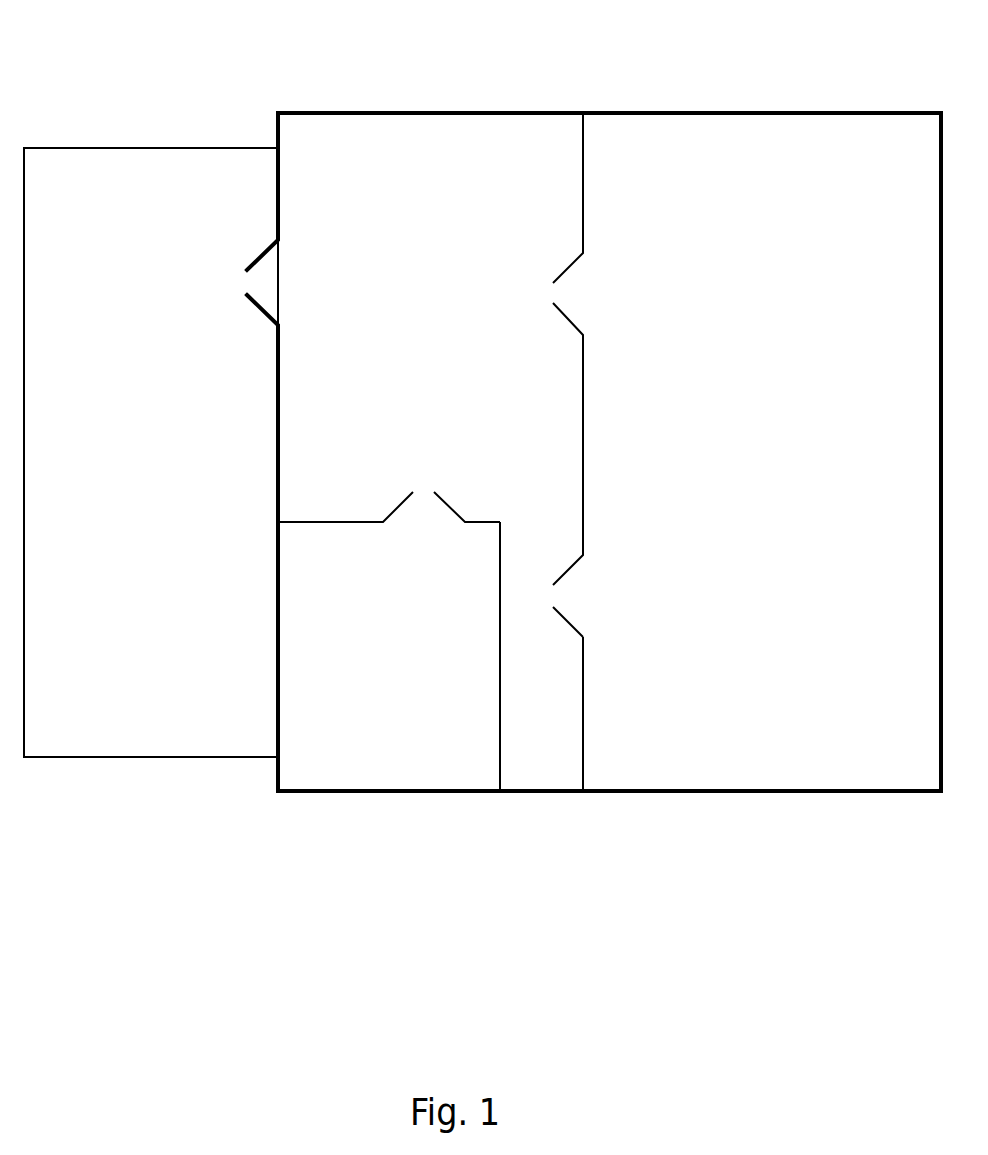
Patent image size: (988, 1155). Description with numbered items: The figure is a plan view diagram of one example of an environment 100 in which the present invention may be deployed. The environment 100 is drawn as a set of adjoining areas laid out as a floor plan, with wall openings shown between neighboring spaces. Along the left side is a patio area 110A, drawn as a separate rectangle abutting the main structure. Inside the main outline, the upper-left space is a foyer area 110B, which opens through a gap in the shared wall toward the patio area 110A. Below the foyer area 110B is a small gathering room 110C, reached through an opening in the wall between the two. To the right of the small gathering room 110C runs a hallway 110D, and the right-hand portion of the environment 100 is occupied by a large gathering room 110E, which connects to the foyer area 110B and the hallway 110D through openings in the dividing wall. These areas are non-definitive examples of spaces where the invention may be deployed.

The environment 100 is at (866, 59).
The patio area 110A is at (168, 428).
The foyer area 110B is at (447, 291).
The small gathering room 110C is at (423, 630).
The hallway 110D is at (567, 716).
The large gathering room 110E is at (793, 410).